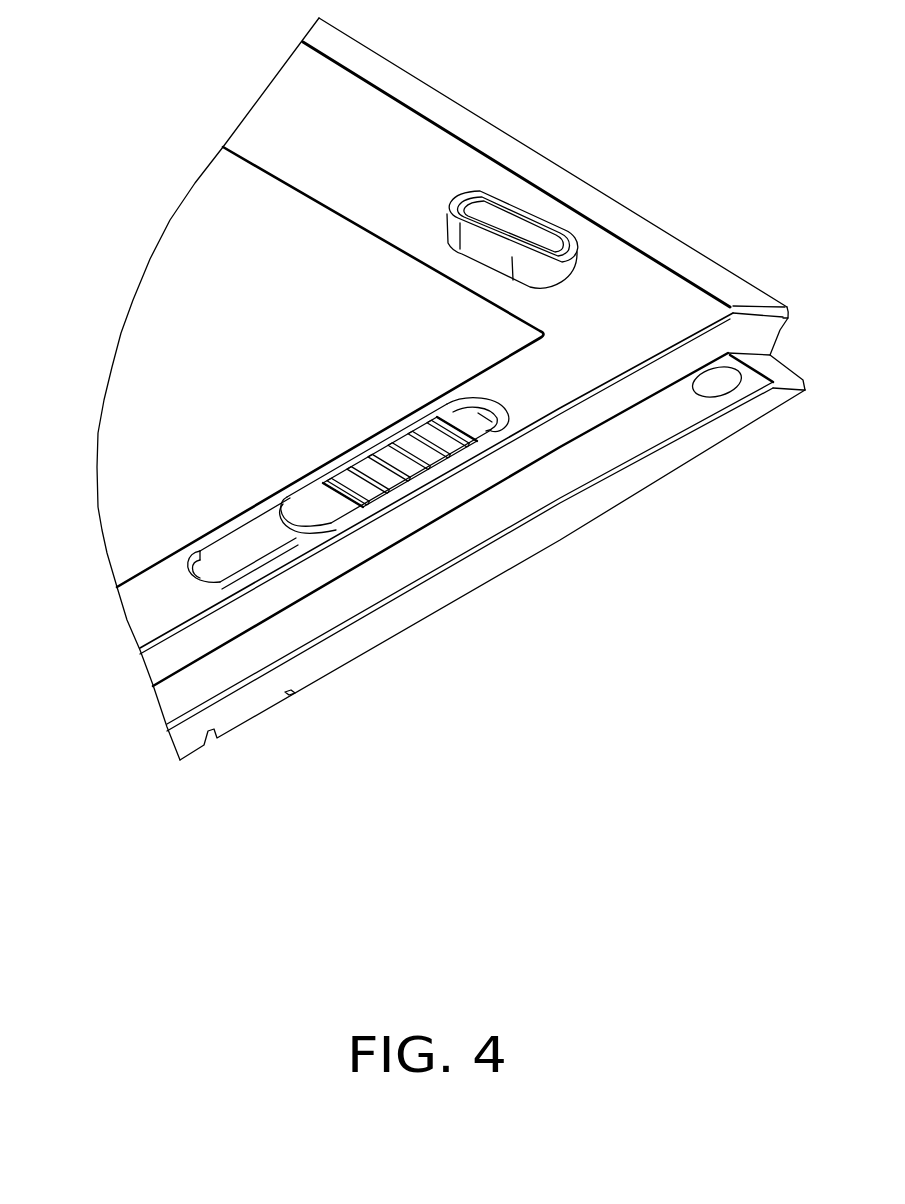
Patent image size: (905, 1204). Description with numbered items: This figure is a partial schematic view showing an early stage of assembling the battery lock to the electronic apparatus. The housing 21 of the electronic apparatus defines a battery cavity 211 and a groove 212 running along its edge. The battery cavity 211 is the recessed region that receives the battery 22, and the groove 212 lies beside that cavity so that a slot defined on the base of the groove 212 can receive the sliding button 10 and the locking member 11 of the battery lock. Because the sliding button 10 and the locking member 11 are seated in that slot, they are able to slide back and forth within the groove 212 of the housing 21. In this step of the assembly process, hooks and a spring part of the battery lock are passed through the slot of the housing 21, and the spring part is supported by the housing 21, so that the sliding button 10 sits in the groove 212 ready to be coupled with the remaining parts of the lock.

The sliding button 10 is at (488, 415).
The locking member 11 is at (402, 438).
The housing 21 is at (618, 280).
The battery cavity 211 is at (275, 217).
The groove 212 is at (233, 565).
The battery 22 is at (285, 447).